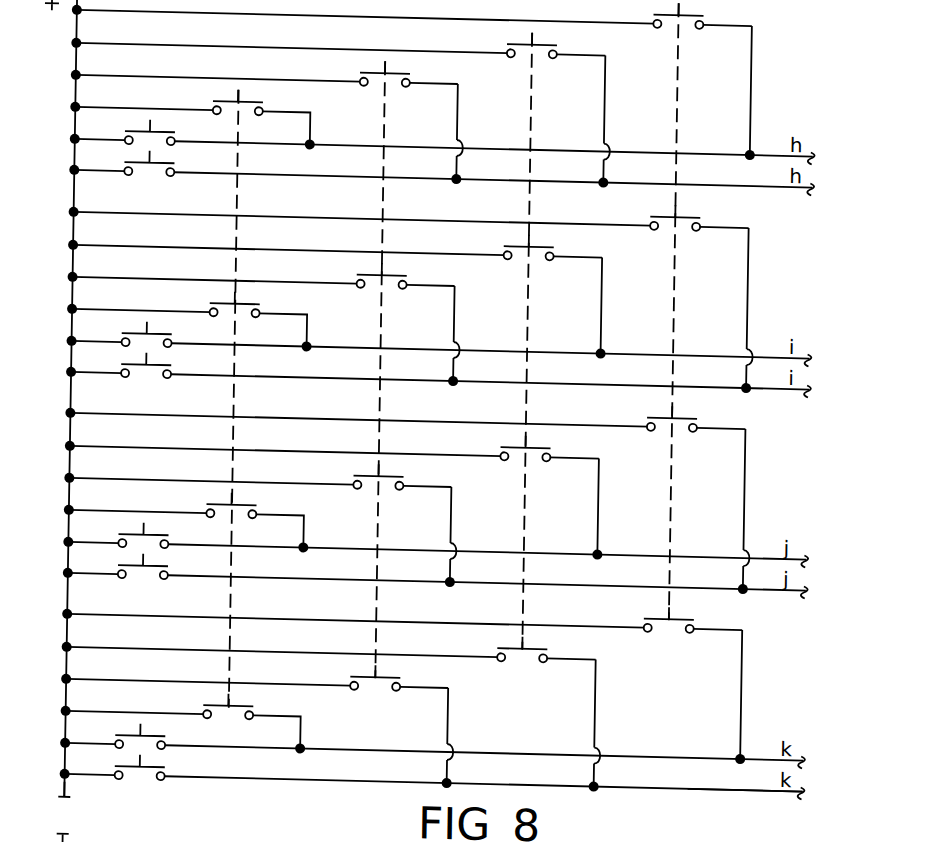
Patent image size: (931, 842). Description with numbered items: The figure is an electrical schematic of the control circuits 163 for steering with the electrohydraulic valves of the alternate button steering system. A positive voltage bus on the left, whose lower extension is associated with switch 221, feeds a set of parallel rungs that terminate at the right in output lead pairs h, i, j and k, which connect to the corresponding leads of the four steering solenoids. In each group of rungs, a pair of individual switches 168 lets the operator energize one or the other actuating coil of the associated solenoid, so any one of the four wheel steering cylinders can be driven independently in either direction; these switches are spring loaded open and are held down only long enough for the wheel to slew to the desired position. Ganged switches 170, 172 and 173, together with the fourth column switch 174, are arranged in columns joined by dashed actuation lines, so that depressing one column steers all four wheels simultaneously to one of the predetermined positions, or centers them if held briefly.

The individual switches 168 is at (128, 159).
The ganged switch 170 is at (266, 95).
The ganged switch 172 is at (412, 63).
The ganged switch 173 is at (558, 31).
The cam-operated switch, fourth column 174 is at (703, 0).
The switch 221 is at (139, 840).
The control circuits 163 is at (695, 778).